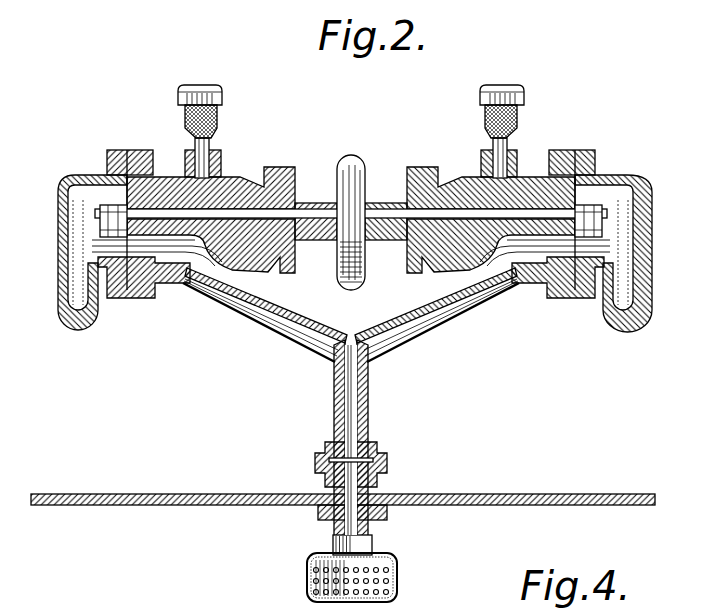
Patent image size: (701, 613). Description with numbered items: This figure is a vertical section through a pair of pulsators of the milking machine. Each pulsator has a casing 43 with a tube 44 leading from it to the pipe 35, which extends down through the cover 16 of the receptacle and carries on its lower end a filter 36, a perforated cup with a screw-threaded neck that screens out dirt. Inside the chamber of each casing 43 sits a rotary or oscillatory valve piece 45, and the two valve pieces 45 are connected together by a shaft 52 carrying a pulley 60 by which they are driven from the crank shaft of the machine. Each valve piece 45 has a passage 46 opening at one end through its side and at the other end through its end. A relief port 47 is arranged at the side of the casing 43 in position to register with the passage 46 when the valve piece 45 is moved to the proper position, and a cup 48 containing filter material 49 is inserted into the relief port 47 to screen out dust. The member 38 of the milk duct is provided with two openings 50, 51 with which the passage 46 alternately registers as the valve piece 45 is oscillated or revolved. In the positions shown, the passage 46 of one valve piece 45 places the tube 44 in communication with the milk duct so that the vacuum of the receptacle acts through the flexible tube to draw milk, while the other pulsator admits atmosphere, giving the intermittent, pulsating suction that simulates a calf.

The cover 16 is at (140, 495).
The pipe 35 is at (360, 392).
The filter 36 is at (385, 560).
The member 38 is at (80, 302).
The casing 43 is at (233, 262).
The tube 44 is at (267, 294).
The valve piece 45 is at (158, 187).
The passage 46 is at (163, 250).
The relief port 47 is at (213, 162).
The cup 48 is at (222, 99).
The filter material 49 is at (218, 122).
The opening 50 is at (110, 188).
The opening 51 is at (93, 245).
The shaft 52 is at (297, 222).
The pulley 60 is at (356, 168).